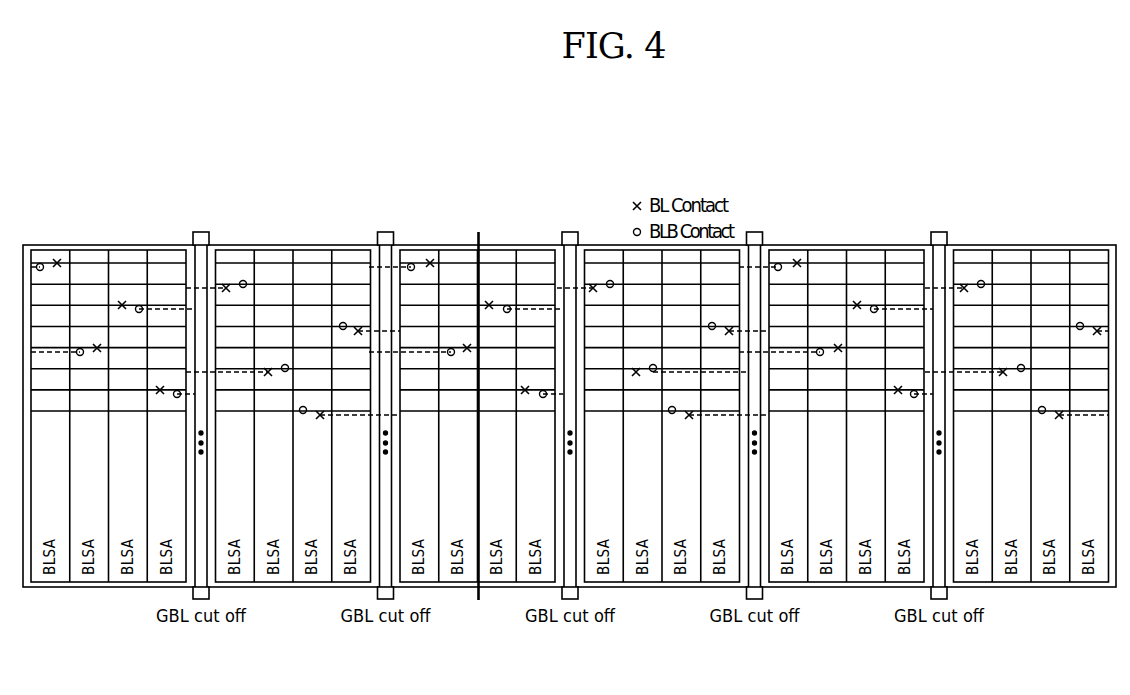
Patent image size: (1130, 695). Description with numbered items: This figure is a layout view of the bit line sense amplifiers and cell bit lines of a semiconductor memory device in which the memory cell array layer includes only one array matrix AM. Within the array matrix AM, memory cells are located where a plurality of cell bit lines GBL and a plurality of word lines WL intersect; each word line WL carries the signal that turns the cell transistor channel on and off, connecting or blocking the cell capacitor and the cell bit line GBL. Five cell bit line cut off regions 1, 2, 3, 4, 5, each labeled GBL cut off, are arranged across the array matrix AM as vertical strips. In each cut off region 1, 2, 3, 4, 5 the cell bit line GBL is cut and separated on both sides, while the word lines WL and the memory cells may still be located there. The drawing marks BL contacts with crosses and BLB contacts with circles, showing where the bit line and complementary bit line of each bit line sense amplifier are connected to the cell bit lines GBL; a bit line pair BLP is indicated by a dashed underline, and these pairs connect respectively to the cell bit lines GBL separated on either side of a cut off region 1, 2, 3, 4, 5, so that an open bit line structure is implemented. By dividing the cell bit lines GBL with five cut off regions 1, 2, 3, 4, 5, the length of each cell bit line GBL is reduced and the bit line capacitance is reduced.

The first cell bit line cut off region 1 is at (201, 232).
The second cell bit line cut off region 2 is at (386, 232).
The third cell bit line cut off region 3 is at (570, 232).
The fourth cell bit line cut off region 4 is at (754, 232).
The fifth cell bit line cut off region 5 is at (939, 232).
The array matrix AM is at (88, 245).
The word line WL is at (478, 402).
The cell bit line GBL is at (550, 237).
The bit line pair BLP is at (618, 237).